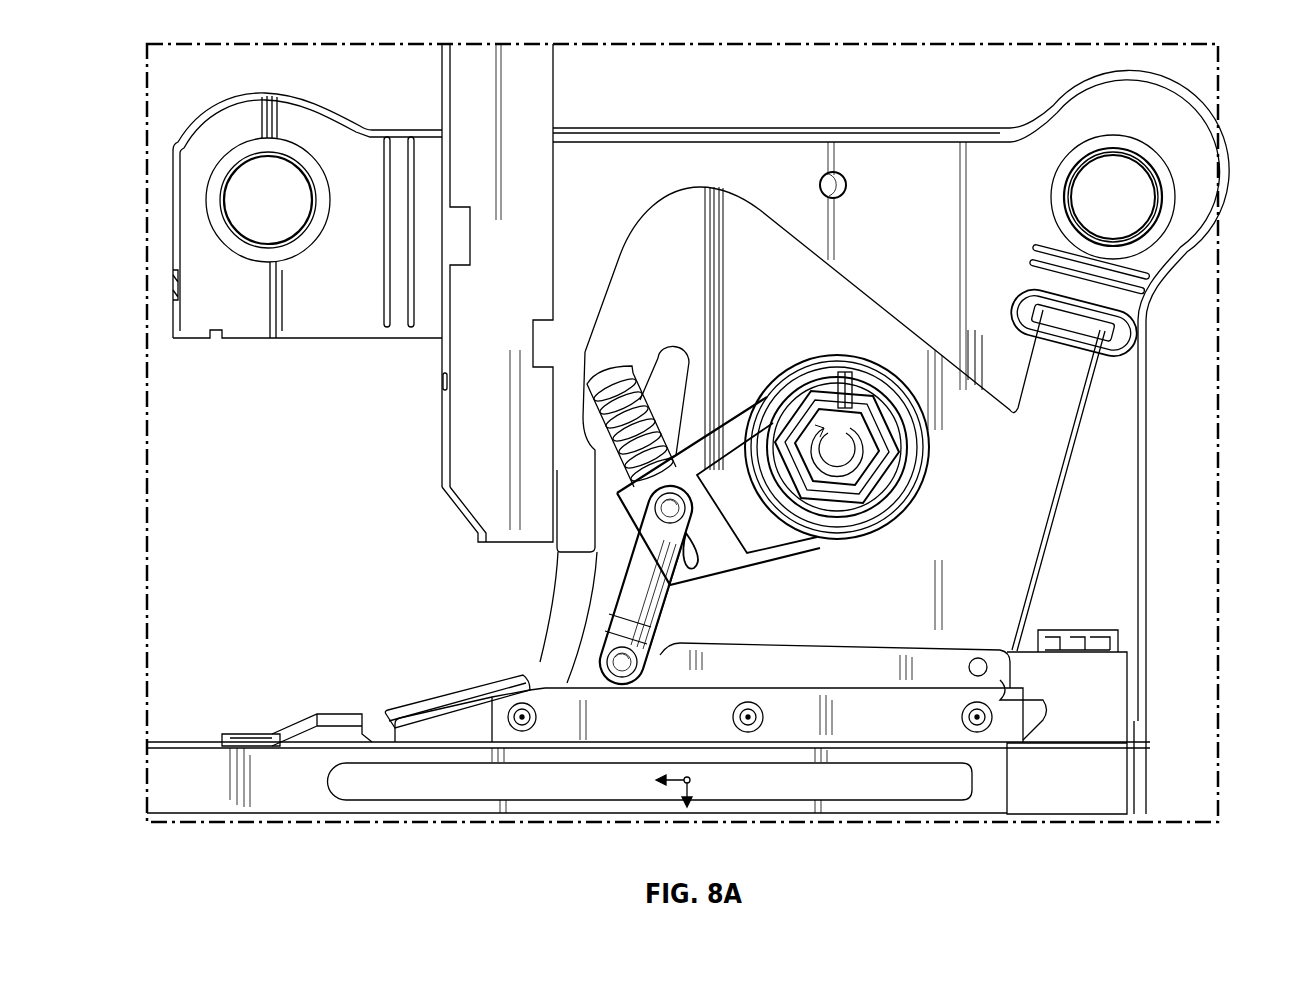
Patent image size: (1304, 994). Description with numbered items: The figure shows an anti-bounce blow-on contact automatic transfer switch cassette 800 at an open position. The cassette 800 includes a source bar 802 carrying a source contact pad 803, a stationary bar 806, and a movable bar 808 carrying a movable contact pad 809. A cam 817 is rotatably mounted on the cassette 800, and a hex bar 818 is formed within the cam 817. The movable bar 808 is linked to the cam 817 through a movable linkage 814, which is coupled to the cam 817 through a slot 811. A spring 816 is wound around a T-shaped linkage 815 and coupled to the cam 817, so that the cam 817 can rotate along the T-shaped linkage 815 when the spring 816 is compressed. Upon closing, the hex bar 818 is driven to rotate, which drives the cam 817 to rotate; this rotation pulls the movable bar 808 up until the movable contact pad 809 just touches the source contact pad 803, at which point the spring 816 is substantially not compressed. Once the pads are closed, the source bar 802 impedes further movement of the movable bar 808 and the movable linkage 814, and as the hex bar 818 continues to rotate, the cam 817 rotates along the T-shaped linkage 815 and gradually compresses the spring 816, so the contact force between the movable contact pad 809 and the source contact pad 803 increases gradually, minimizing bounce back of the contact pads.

The anti-bounce blow-on contact automatic transfer switch cassette 800 is at (1282, 140).
The source bar 802 is at (472, 118).
The source contact pad 803 is at (505, 543).
The stationary bar 806 is at (863, 755).
The movable bar 808 is at (793, 718).
The movable contact pad 809 is at (478, 677).
The slot 811 is at (694, 568).
The movable linkage 814 is at (623, 603).
The T-shaped linkage 815 is at (622, 372).
The spring 816 is at (686, 357).
The cam 817 is at (927, 463).
The hex bar 818 is at (872, 392).